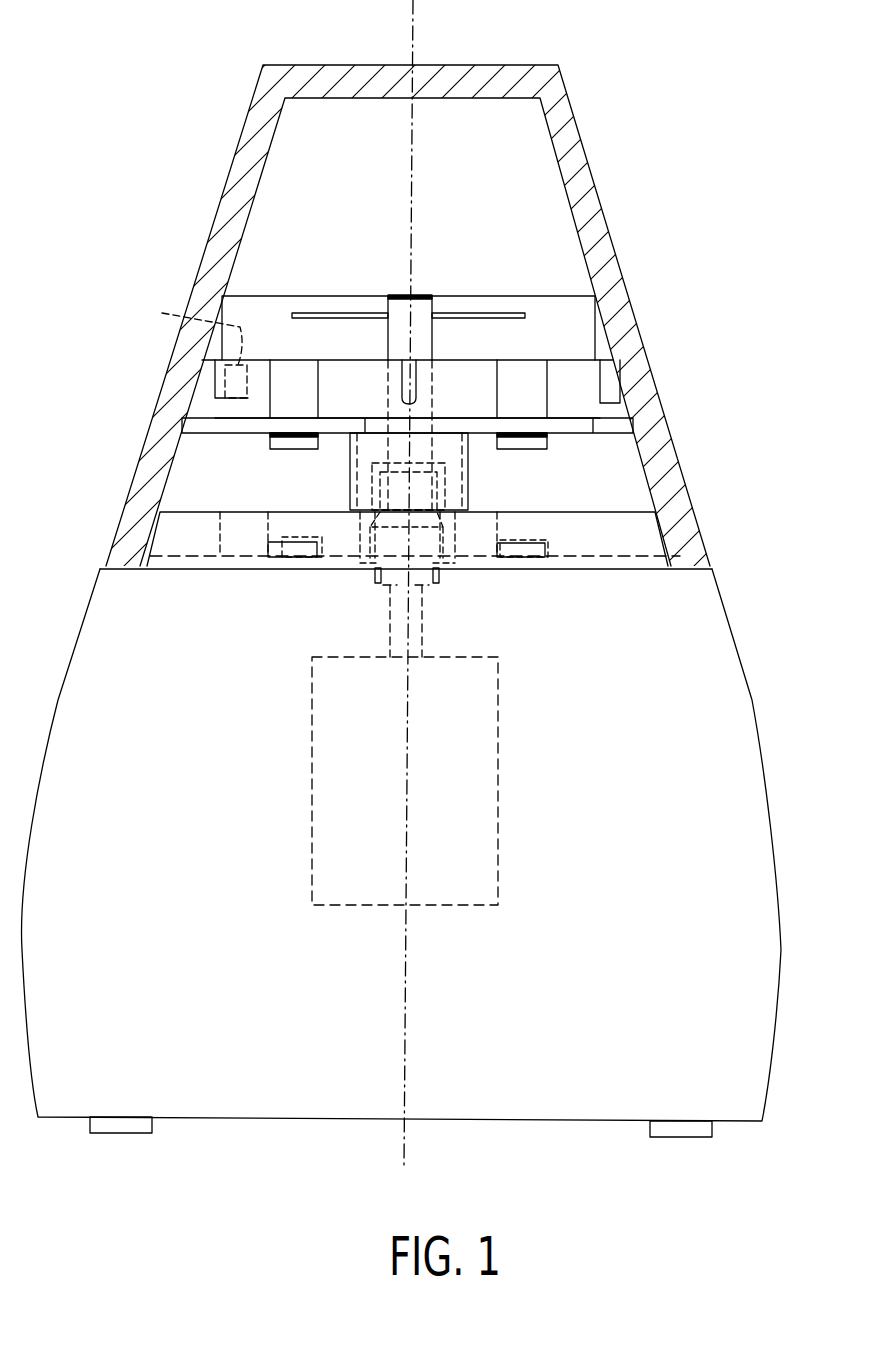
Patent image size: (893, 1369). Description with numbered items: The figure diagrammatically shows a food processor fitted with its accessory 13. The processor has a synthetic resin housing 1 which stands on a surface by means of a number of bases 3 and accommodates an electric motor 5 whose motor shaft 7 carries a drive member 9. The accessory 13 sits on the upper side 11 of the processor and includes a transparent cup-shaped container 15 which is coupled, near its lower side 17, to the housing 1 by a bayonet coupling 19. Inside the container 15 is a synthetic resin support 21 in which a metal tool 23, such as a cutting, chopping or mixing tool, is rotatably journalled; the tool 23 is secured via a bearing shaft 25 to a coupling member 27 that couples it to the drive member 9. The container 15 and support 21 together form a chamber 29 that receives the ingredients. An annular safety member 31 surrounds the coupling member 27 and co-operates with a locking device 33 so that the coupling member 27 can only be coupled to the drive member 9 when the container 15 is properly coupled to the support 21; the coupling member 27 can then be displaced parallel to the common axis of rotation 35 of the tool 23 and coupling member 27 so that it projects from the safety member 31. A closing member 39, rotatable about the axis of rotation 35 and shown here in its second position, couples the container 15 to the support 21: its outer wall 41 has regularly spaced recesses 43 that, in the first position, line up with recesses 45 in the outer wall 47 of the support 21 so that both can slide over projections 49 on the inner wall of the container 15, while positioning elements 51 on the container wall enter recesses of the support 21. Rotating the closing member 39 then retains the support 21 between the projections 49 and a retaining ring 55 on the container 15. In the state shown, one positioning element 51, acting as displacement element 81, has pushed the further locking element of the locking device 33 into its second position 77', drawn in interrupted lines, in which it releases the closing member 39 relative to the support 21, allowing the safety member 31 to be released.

The housing 1 is at (752, 705).
The bases 3 is at (117, 1138).
The electric motor 5 is at (312, 797).
The motor shaft 7 is at (388, 615).
The drive member 9 is at (440, 595).
The upper side 11 is at (623, 510).
The accessory 13 is at (730, 260).
The cup-shaped container 15 is at (255, 133).
The lower side 17 is at (605, 570).
The bayonet coupling 19 is at (300, 556).
The support 21 is at (594, 356).
The tool 23 is at (500, 296).
The bearing shaft 25 is at (437, 372).
The coupling member 27 is at (465, 490).
The chamber 29 is at (527, 143).
The safety member 31 is at (348, 488).
The locking device 33 is at (658, 418).
The axis of rotation 35 is at (414, 28).
The closing member 39 is at (205, 426).
The outer wall 41 is at (460, 417).
The recesses 43 is at (343, 417).
The recesses 45 is at (275, 359).
The outer wall 47 is at (367, 358).
The projections 49 is at (290, 445).
The positioning elements 51 is at (612, 375).
The displacement element 81 is at (232, 393).
The retaining ring 55 is at (203, 345).
The further locking element (second position) 77' is at (183, 333).